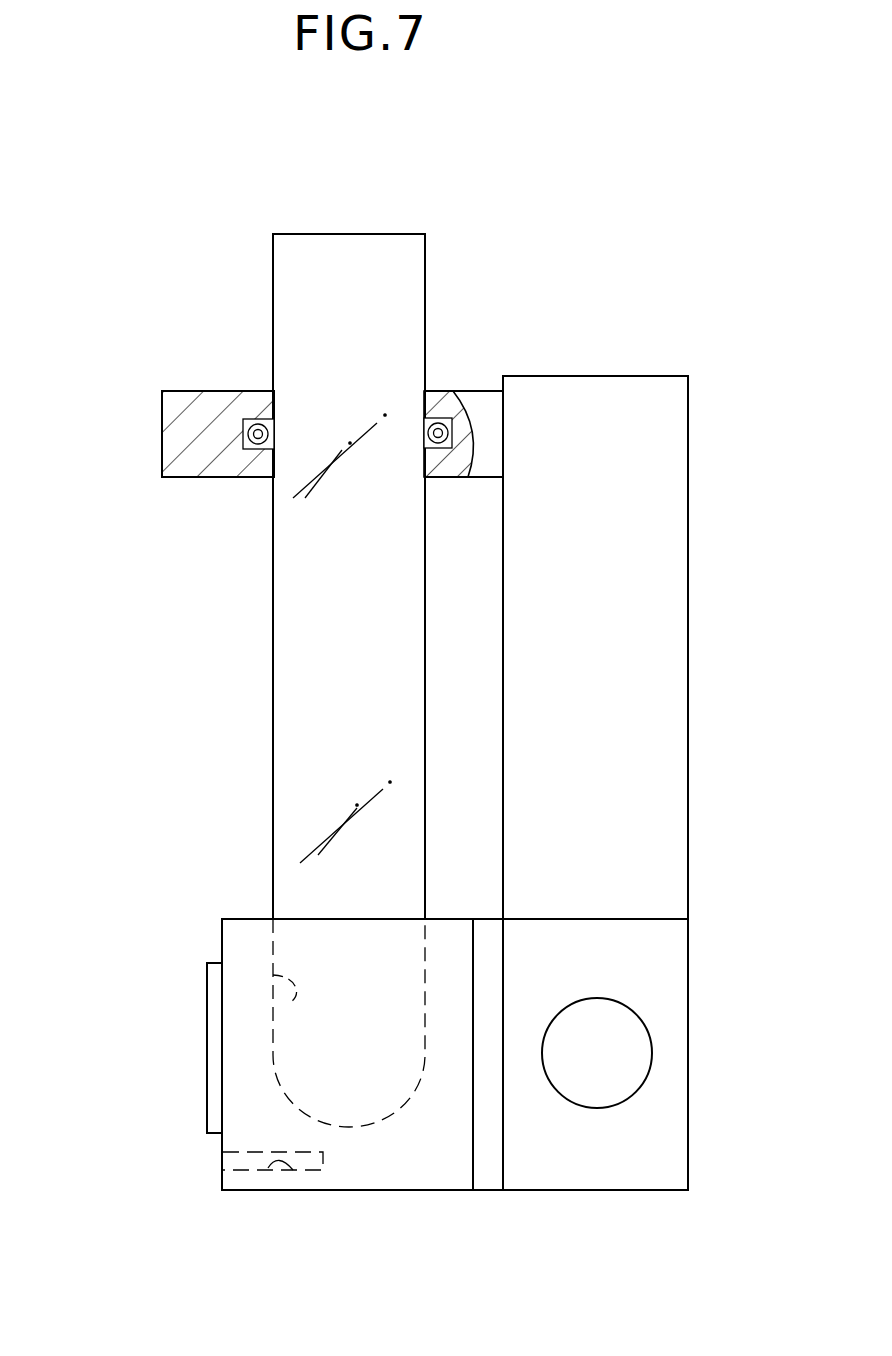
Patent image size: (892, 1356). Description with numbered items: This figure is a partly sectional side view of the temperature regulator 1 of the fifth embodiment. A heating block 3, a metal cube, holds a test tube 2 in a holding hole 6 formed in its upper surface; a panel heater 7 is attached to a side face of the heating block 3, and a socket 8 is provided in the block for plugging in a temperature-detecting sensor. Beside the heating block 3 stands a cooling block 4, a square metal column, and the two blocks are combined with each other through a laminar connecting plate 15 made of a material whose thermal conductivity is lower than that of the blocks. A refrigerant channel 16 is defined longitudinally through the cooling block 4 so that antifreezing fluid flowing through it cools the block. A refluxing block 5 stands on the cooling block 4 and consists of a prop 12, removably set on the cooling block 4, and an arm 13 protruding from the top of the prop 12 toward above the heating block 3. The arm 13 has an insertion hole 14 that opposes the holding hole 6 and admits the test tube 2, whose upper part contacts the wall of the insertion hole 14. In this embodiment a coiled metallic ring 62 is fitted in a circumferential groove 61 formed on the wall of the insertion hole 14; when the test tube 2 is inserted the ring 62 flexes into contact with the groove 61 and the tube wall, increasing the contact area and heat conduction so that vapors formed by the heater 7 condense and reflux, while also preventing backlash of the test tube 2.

The temperature regulator 1 is at (362, 162).
The test tube 2 is at (287, 646).
The heating block 3 is at (237, 943).
The cooling block 4 is at (683, 988).
The refluxing block 5 is at (700, 559).
The holding hole 6 is at (290, 1004).
The panel heater 7 is at (210, 1075).
The socket 8 is at (288, 1170).
The prop 12 is at (680, 448).
The arm 13 is at (182, 400).
The insertion hole 14 is at (424, 398).
The connecting plate 15 is at (487, 1175).
The refrigerant channel 16 is at (643, 1027).
The circumferential groove 61 is at (259, 419).
The coiled metallic ring 62 is at (451, 450).